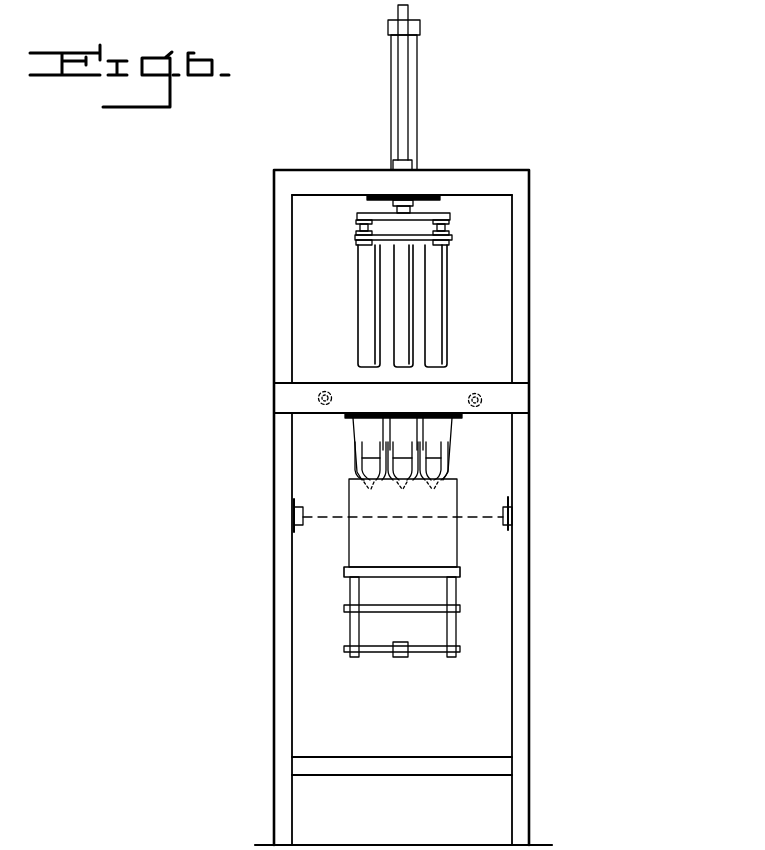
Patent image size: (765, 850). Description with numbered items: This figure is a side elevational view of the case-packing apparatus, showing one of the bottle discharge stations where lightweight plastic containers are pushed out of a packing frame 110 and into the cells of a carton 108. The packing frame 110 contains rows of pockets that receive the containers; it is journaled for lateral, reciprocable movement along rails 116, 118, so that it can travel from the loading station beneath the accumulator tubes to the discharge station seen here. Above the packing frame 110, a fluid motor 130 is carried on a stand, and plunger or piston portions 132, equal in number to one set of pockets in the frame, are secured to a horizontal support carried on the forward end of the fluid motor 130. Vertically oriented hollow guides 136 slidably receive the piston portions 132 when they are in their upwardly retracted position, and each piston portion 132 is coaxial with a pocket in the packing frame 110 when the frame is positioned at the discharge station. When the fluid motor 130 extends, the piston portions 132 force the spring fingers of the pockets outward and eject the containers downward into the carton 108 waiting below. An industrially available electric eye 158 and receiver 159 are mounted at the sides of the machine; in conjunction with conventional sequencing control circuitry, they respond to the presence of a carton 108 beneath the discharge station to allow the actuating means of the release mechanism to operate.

The fluid motor 130 is at (418, 53).
The hollow guides 136 is at (407, 88).
The plunger or piston portions 132 is at (440, 292).
The rail 118 is at (327, 390).
The rail 116 is at (475, 392).
The packing frame 110 is at (344, 420).
The carton 108 is at (457, 534).
The electric eye 158 is at (293, 504).
The receiver 159 is at (508, 497).